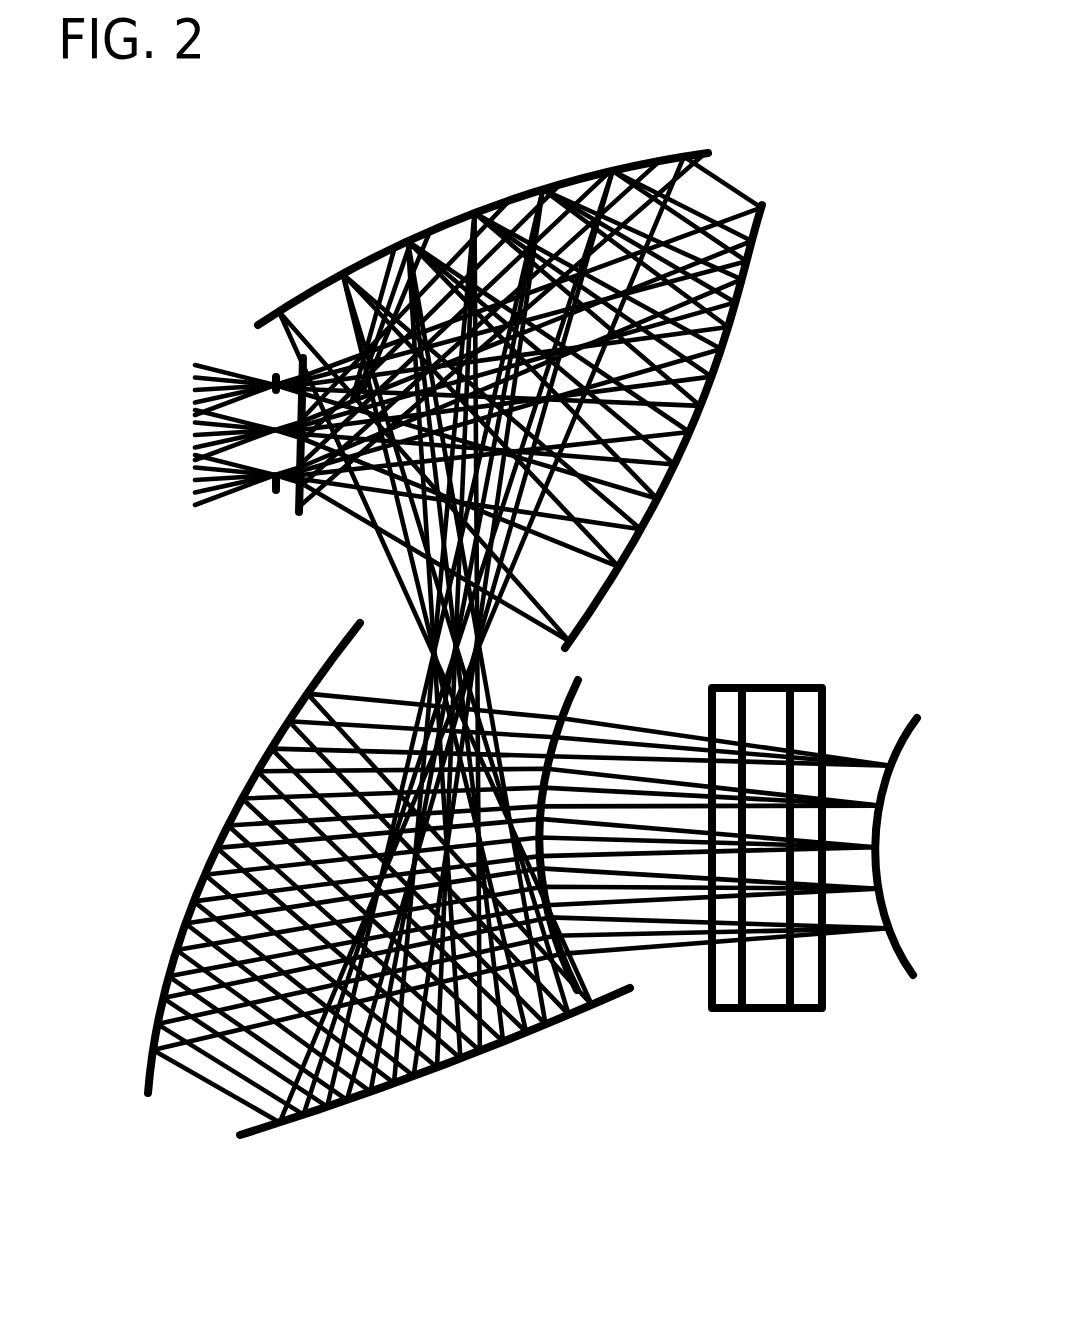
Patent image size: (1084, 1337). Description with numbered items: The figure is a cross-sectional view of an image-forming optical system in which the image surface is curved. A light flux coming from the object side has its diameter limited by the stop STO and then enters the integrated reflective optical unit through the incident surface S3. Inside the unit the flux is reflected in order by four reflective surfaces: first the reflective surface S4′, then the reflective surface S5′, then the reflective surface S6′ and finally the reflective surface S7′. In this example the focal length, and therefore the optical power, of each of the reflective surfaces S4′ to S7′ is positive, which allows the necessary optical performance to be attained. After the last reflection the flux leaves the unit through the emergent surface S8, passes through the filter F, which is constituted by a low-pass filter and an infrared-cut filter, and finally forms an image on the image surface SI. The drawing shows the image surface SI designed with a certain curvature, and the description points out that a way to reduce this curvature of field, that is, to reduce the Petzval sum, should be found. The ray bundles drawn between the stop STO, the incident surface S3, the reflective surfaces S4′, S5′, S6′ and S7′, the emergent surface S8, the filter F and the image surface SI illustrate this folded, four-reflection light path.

The incident surface S3 is at (300, 362).
The stop STO is at (268, 484).
The reflective surface S5′ is at (450, 227).
The reflective surface S4′ is at (707, 418).
The reflective surface S6′ is at (397, 1087).
The reflective surface S7′ is at (233, 803).
The emergent surface S8 is at (590, 987).
The filter F is at (755, 1012).
The image surface SI is at (890, 957).